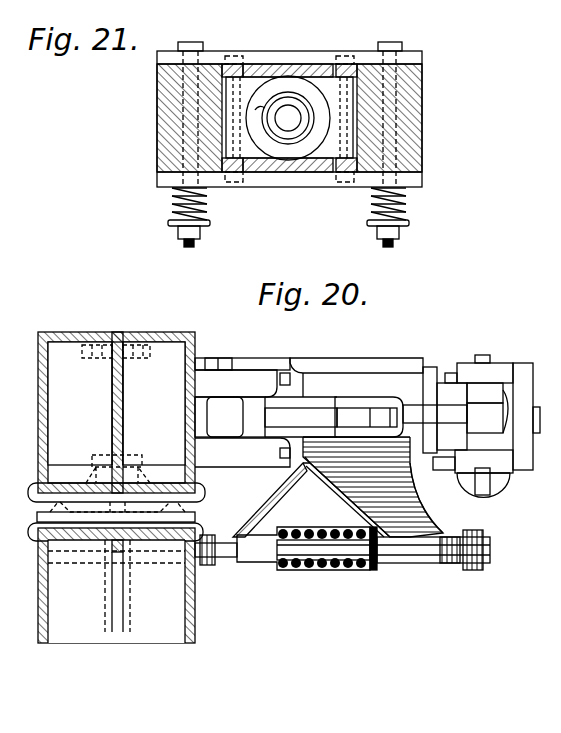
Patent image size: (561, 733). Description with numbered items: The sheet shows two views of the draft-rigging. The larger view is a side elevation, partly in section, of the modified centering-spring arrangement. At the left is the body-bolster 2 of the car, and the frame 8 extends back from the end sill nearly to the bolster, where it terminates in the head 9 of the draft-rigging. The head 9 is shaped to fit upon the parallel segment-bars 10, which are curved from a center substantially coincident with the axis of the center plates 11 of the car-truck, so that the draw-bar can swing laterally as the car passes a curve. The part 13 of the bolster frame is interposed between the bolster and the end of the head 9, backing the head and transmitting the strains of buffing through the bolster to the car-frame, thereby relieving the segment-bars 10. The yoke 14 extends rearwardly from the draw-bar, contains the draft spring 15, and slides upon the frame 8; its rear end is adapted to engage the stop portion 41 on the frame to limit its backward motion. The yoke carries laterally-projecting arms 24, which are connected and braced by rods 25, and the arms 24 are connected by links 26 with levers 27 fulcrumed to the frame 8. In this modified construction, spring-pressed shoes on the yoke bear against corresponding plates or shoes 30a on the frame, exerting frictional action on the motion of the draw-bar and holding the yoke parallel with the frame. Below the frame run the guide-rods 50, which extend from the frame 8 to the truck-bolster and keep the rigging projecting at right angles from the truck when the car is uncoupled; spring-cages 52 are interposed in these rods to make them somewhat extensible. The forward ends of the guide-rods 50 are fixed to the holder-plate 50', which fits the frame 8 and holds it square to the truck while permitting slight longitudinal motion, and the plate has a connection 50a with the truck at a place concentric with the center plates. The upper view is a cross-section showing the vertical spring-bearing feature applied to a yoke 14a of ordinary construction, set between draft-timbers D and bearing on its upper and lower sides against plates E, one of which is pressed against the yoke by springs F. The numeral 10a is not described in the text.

In FIG. 21, the draft-timbers D is at (157, 103).
In FIG. 21, the plates E is at (234, 64).
In FIG. 21, the yoke 14a is at (273, 64).
In FIG. 21, the draft spring 15 is at (297, 147).
In FIG. 21, the springs F is at (172, 205).
In FIG. 20, the body-bolster 2 is at (116, 412).
In FIG. 20, the center plates 11 is at (198, 503).
In FIG. 20, the lower column 10a is at (97, 493).
In FIG. 20, the part of frame 13 is at (203, 357).
In FIG. 20, the head 9 is at (222, 362).
In FIG. 20, the frame 8 is at (356, 397).
In FIG. 20, the segment-bars 10 is at (278, 380).
In FIG. 20, the levers 27 is at (331, 417).
In FIG. 20, the stop portion 41 is at (430, 366).
In FIG. 20, the plates or shoes 30a is at (450, 376).
In FIG. 20, the arms 24 is at (490, 375).
In FIG. 20, the rods 25 is at (485, 393).
In FIG. 20, the links 26 is at (487, 411).
In FIG. 20, the yoke 14 is at (450, 464).
In FIG. 20, the holder-plate 50' is at (373, 487).
In FIG. 20, the connection 50a is at (311, 497).
In FIG. 20, the spring-cages 52 is at (307, 528).
In FIG. 20, the guide-rods 50 is at (342, 567).